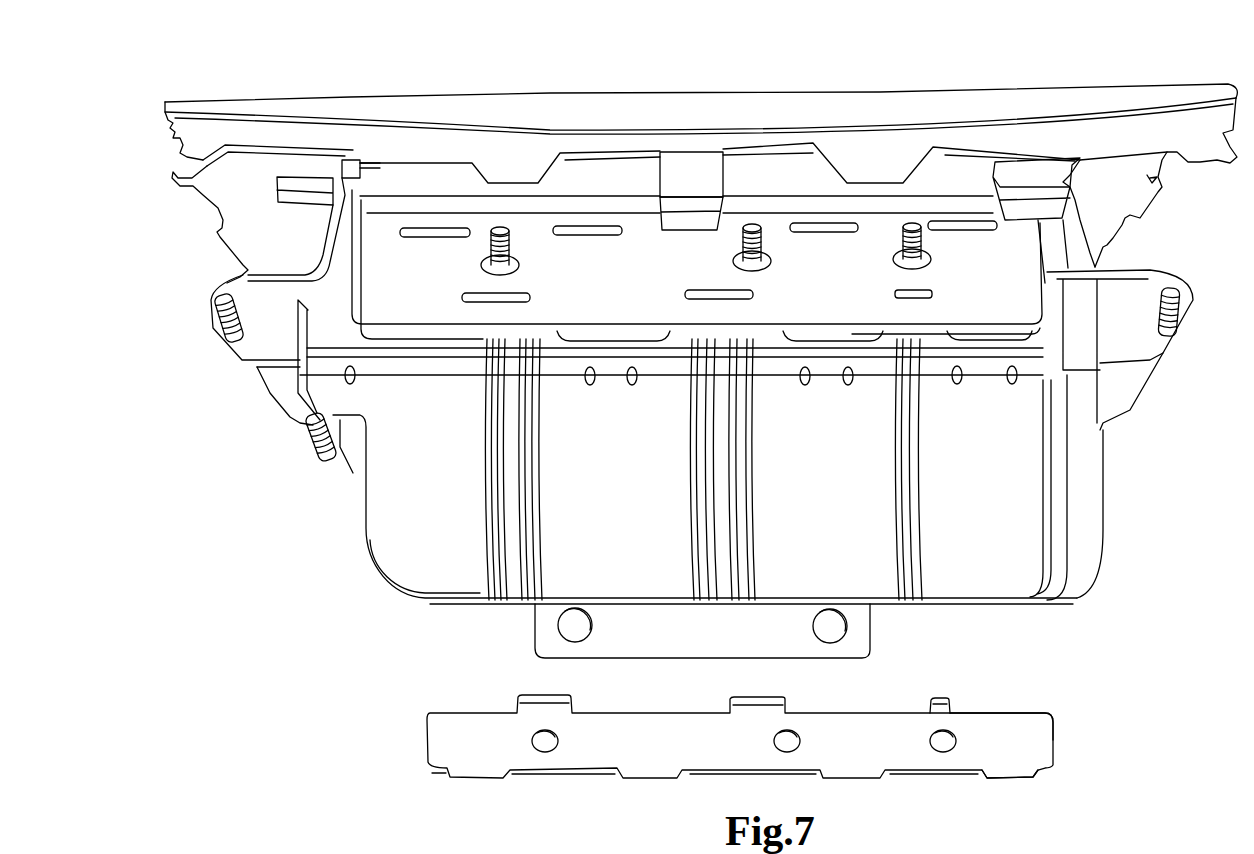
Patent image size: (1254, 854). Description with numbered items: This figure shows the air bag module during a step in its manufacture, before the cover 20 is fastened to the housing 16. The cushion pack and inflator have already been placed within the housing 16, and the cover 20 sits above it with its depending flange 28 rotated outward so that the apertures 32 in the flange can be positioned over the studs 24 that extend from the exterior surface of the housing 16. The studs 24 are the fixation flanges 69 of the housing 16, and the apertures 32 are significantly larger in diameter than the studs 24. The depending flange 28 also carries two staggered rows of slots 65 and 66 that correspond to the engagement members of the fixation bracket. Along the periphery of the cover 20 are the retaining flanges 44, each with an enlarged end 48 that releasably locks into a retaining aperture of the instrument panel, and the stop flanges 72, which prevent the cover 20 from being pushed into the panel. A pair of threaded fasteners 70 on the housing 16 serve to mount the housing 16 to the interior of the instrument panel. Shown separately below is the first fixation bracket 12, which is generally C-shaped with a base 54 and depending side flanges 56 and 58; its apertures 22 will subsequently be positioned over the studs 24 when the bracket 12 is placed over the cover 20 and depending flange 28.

The first fixation bracket 12 is at (1040, 751).
The housing 16 is at (1083, 522).
The cover 20 is at (1183, 93).
The apertures 22 is at (559, 741).
The studs 24 is at (504, 230).
The depending flange 28 is at (382, 310).
The apertures 32 is at (514, 268).
The retaining flanges 44 is at (313, 160).
The enlarged end 48 is at (290, 185).
The base 54 is at (1040, 726).
The side flange 56 is at (1013, 777).
The side flange 58 is at (940, 703).
The slots 65 is at (432, 237).
The slots 66 is at (510, 302).
The fixation flanges 69 is at (277, 392).
The threaded fasteners 70 is at (213, 325).
The stop flanges 72 is at (513, 173).